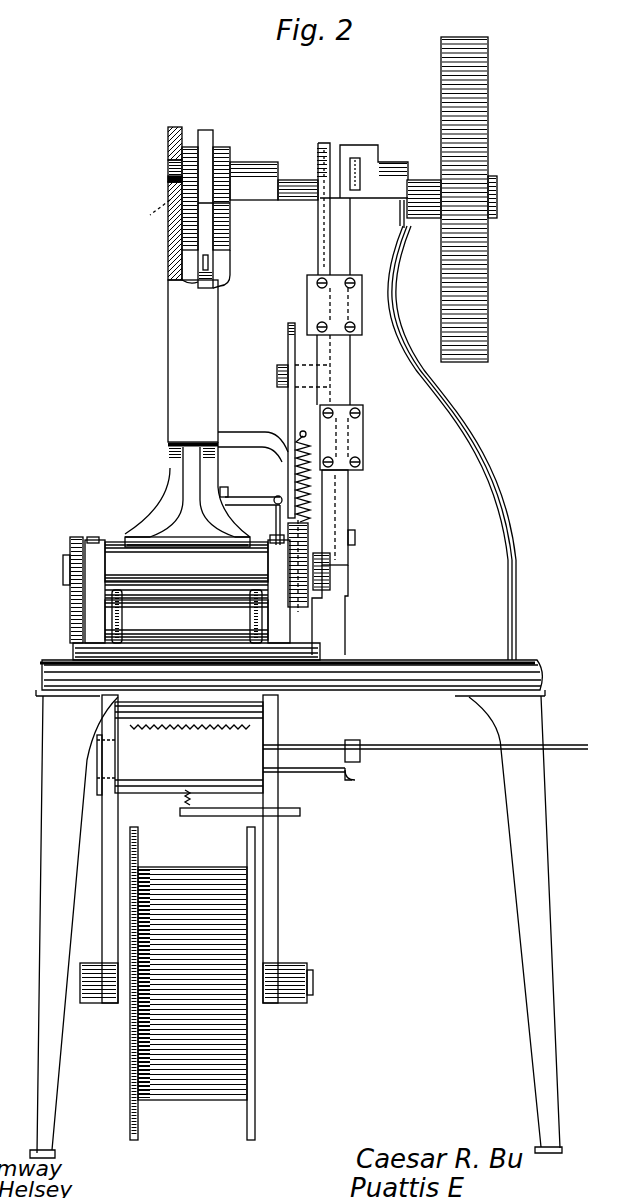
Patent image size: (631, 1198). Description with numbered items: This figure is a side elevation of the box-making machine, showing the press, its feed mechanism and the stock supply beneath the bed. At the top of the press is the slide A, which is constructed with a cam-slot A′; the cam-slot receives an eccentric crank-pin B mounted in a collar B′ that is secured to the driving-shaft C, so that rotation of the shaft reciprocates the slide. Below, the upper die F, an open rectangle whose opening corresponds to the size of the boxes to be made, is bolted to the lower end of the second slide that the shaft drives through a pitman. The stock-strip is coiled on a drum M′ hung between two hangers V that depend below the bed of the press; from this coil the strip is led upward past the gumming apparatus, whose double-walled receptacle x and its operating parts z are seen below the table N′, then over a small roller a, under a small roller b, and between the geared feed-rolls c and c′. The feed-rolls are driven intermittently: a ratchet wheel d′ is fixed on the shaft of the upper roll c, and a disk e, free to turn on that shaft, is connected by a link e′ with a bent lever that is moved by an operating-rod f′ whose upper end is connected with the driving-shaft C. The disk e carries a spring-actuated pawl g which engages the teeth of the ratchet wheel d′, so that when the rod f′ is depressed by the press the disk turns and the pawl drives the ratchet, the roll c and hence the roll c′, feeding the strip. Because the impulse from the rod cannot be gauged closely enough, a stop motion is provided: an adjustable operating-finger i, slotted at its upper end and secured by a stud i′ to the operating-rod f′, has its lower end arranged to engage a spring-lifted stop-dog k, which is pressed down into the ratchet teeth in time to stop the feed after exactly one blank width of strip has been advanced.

The slide A is at (175, 128).
The cam-slot A′ is at (146, 205).
The eccentric crank-pin B is at (168, 170).
The collar B′ is at (190, 148).
The driving-shaft C is at (292, 188).
The operating-rod f′ is at (343, 265).
The operating-finger i is at (281, 420).
The stud i′ is at (271, 375).
The upper die F is at (206, 413).
The stop-dog k is at (290, 522).
The upper feed-roll c is at (186, 562).
The small roller b is at (172, 600).
The lower feed-roll c′ is at (186, 619).
The small roller a is at (279, 591).
The spring-actuated pawl g is at (298, 578).
The link e′ is at (300, 520).
The ratchet wheel d′ is at (300, 597).
The disk e is at (320, 622).
The table N′ is at (405, 668).
The box x is at (189, 747).
The rod z is at (97, 752).
The hangers V is at (194, 849).
The drum M′ is at (128, 1010).